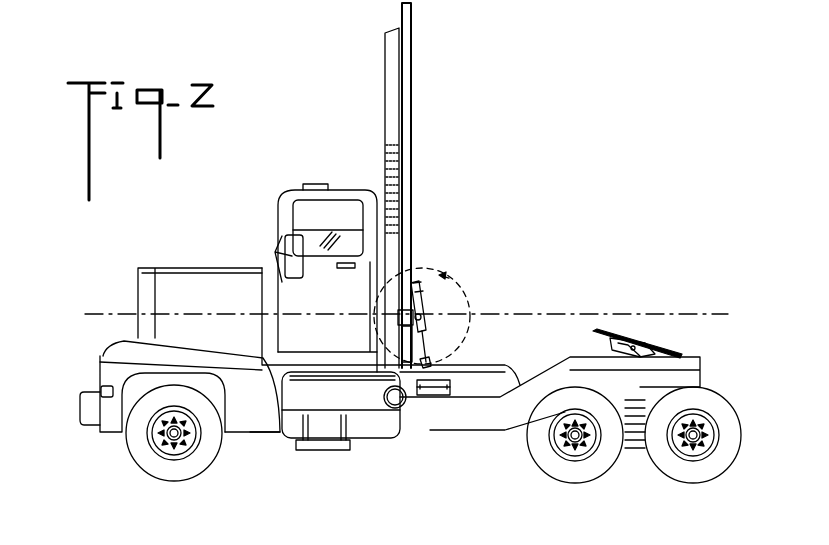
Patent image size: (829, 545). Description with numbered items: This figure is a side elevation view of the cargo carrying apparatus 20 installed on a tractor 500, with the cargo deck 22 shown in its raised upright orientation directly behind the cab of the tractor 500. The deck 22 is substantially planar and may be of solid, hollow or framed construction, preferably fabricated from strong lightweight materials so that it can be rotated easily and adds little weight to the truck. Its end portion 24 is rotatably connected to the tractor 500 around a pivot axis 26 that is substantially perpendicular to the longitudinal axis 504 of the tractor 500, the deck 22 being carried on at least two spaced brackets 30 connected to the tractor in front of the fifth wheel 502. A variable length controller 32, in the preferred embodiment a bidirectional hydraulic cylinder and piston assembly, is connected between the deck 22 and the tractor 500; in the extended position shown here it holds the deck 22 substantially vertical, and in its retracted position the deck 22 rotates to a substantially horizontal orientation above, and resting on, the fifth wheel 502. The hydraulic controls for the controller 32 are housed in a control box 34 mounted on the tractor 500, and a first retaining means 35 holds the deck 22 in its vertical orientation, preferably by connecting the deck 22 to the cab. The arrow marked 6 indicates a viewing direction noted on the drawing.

The tractor 500 is at (296, 156).
The cargo deck 22 is at (412, 112).
The first retaining means 35 is at (385, 190).
The end portion 24 is at (415, 295).
The cargo carrying apparatus 20 is at (466, 292).
The view direction arrow 6 is at (450, 282).
The variable length controller 32 is at (420, 318).
The brackets 30 is at (404, 357).
The control box 34 is at (438, 392).
The pivot axis 26 is at (393, 405).
The longitudinal axis 504 is at (676, 314).
The fifth wheel 502 is at (655, 347).